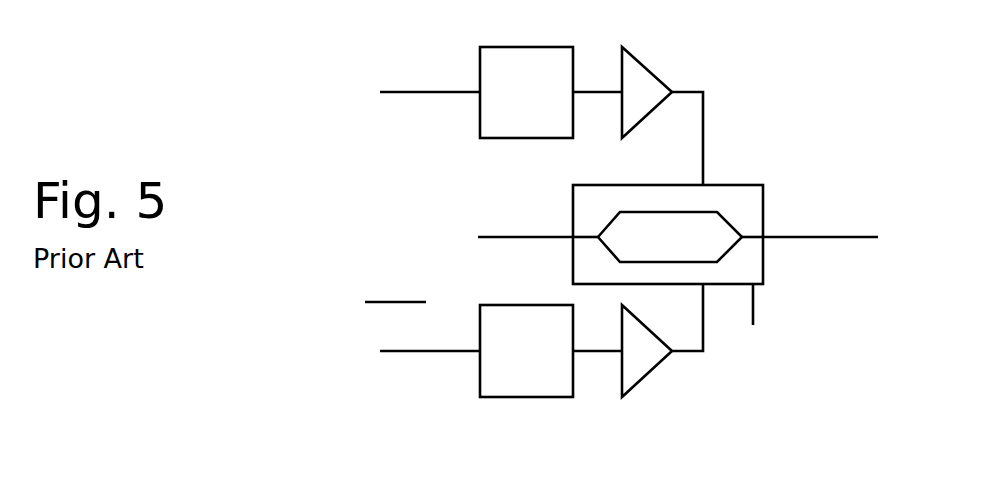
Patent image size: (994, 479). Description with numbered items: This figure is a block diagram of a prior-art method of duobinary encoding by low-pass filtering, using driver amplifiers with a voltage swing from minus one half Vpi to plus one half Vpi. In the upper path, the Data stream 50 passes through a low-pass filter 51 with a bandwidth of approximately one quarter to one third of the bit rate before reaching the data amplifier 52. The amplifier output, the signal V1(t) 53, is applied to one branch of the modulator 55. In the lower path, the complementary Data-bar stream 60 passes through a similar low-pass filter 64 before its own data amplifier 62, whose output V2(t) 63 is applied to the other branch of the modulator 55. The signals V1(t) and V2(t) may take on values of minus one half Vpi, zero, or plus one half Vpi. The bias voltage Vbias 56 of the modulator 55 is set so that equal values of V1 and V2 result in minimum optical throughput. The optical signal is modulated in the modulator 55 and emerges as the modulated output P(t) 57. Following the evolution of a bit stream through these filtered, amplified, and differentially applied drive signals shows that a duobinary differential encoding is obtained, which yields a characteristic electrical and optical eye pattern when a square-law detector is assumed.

The Data stream 50 is at (410, 98).
The low-pass filter 51 is at (545, 47).
The data amplifier 52 is at (657, 62).
The output V1(t) 53 is at (700, 122).
The modulator 55 is at (572, 215).
The bias voltage Vbias 56 is at (778, 314).
The modulated output P(t) 57 is at (795, 242).
The inverted data input 60 is at (412, 357).
The data amplifier 62 is at (618, 382).
The output V2(t) 63 is at (702, 355).
The low-pass filter 64 is at (545, 303).